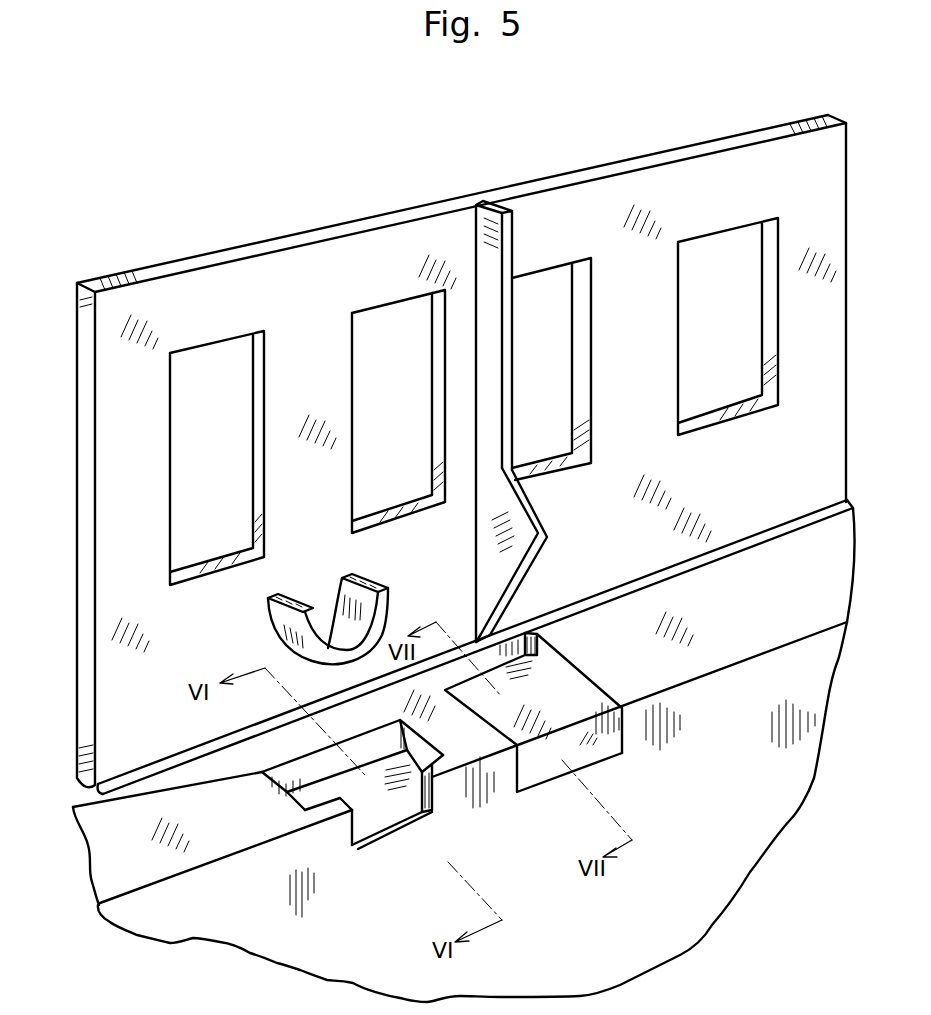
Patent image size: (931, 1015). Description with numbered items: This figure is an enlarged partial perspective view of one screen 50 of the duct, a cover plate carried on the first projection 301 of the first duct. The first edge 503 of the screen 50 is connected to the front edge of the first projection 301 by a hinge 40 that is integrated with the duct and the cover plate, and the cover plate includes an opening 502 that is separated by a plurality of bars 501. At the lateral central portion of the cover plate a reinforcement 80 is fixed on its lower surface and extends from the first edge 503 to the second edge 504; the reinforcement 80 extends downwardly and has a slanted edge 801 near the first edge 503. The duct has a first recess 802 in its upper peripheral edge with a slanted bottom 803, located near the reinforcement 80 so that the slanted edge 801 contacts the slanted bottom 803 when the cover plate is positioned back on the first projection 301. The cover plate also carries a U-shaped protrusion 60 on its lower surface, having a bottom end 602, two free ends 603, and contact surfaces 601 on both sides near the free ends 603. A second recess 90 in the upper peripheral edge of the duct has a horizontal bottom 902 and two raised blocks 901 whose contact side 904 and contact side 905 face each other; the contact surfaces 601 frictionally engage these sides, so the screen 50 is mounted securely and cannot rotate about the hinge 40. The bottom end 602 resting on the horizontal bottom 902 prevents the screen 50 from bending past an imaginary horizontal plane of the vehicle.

The screen 50 is at (805, 182).
The second edge 504 is at (601, 178).
The bars 501 is at (300, 375).
The opening 502 is at (747, 374).
The first projection 301 is at (845, 540).
The first edge 503 is at (687, 553).
The reinforcement 80 is at (513, 527).
The slanted edge 801 is at (527, 583).
The first recess 802 is at (558, 718).
The slanted bottom 803 is at (588, 755).
The protrusion 60 is at (298, 652).
The contact surfaces 601 is at (282, 617).
The bottom end 602 is at (386, 606).
The free ends 603 is at (367, 577).
The hinge 40 is at (93, 797).
The second recess 90 is at (377, 772).
The blocks 901 is at (438, 758).
The horizontal bottom 902 is at (365, 787).
The contact side 904 is at (432, 800).
The contact side 905 is at (358, 846).